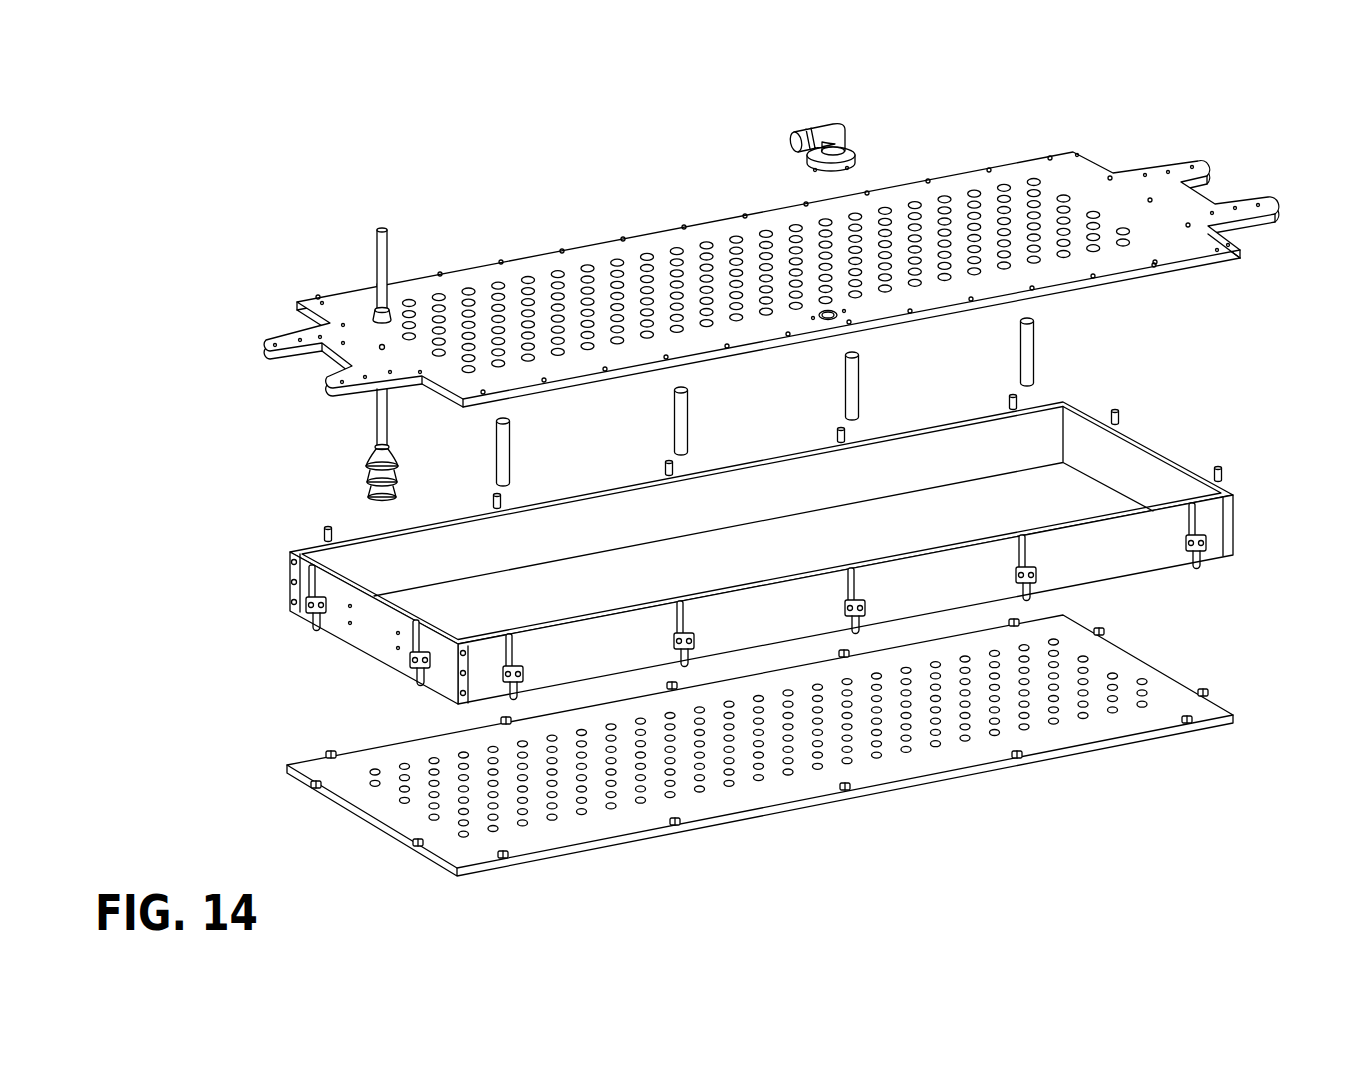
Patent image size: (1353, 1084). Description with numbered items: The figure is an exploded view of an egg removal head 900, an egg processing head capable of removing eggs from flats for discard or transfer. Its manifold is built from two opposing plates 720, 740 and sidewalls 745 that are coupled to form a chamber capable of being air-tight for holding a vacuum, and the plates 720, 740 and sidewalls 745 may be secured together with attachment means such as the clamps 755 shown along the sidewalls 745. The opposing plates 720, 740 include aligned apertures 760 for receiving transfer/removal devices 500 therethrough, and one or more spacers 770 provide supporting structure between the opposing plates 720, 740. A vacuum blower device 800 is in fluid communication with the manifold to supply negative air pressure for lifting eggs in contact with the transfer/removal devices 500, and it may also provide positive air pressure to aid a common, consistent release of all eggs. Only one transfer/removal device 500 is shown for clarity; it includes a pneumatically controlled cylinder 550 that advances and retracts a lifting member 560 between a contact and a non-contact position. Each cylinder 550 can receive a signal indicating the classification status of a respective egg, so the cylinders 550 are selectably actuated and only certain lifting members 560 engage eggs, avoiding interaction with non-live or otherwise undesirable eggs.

The egg removal head 900 is at (575, 167).
The vacuum blower device 800 is at (803, 125).
The plate 720 is at (297, 302).
The apertures 760 is at (531, 282).
The pneumatically controlled cylinder 550 is at (383, 227).
The transfer/removal device 500 is at (372, 403).
The lifting member 560 is at (390, 450).
The spacers 770 is at (1037, 347).
The sidewalls 745 is at (315, 542).
The clamps 755 is at (413, 685).
The plate 740 is at (1190, 728).